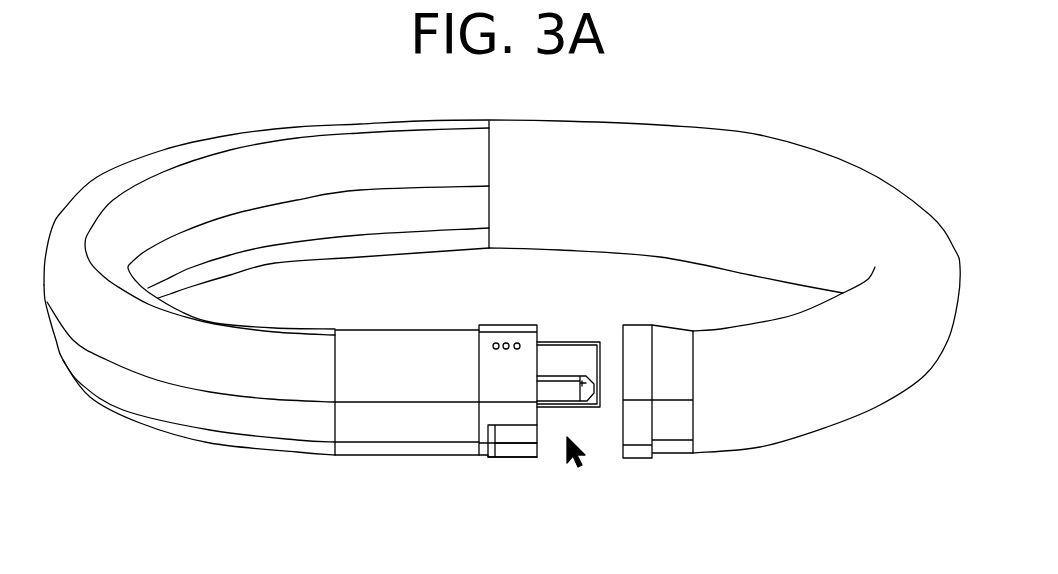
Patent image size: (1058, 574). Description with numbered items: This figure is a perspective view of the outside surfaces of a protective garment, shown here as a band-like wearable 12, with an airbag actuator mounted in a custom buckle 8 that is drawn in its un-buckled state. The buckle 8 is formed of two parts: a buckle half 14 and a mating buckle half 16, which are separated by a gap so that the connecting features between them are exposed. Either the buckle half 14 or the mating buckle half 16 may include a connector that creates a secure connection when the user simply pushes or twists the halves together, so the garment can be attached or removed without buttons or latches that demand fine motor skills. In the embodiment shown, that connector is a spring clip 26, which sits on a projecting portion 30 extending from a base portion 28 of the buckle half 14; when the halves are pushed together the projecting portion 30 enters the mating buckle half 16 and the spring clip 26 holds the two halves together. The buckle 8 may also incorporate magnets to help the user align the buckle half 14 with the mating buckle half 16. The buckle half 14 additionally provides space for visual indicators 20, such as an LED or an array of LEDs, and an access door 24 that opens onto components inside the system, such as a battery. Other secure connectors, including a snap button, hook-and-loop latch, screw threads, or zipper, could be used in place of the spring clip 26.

The custom buckle 8 is at (572, 462).
The bracelet band 12 is at (742, 175).
The buckle half 14 is at (492, 413).
The mating buckle half 16 is at (632, 458).
The visual indicators 20 is at (508, 345).
The access door 24 is at (527, 455).
The spring clip 26 is at (582, 382).
The base portion 28 is at (508, 436).
The projecting portion 30 is at (555, 360).